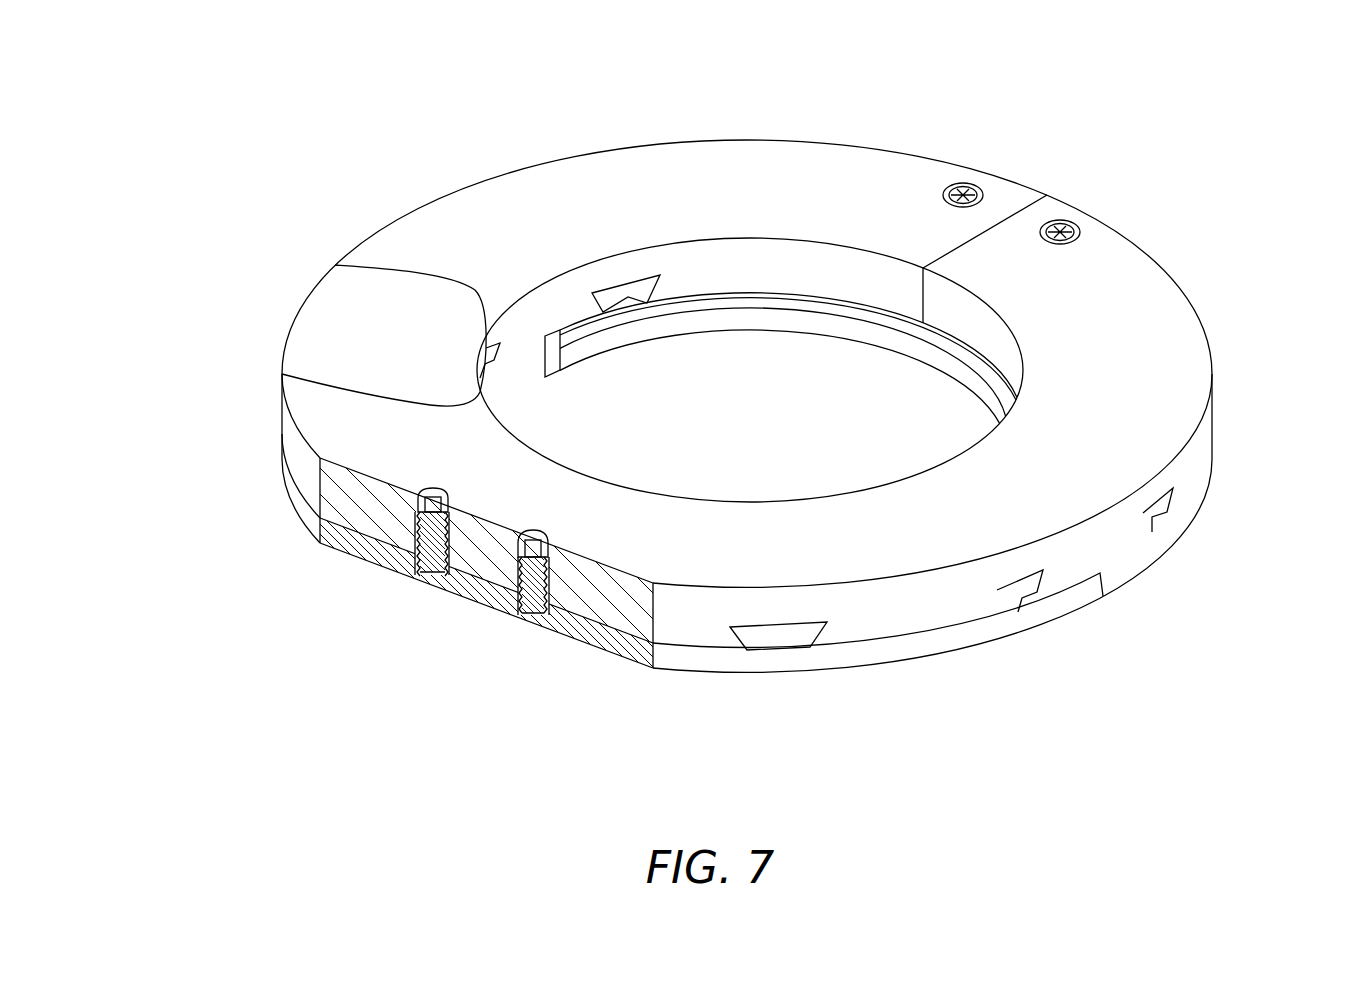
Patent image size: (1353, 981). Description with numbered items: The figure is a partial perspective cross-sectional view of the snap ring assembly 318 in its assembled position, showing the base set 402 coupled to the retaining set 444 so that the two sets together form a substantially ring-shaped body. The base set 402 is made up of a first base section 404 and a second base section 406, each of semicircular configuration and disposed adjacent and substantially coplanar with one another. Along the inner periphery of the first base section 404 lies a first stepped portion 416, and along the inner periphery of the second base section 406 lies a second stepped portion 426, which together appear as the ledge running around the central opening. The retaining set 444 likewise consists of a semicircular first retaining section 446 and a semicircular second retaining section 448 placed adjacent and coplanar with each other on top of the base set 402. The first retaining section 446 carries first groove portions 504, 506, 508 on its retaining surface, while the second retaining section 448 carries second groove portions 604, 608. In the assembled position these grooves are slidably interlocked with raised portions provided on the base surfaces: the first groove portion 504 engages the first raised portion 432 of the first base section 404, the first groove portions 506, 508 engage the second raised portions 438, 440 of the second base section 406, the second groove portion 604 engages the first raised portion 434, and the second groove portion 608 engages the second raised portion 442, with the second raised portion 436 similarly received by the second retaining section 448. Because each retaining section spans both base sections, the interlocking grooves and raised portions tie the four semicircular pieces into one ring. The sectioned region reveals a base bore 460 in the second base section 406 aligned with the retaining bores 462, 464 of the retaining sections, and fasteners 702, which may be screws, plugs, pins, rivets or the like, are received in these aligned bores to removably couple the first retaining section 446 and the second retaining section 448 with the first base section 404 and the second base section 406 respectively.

The snap ring assembly 318 is at (1200, 108).
The base set 402 is at (1230, 487).
The first base section 404 is at (1200, 512).
The second base section 406 is at (948, 652).
The first stepped portion 416 is at (742, 332).
The second stepped portion 426 is at (545, 386).
The first raised portion 432 is at (1158, 514).
The first raised portion 434 is at (597, 313).
The second raised portion 436 is at (282, 437).
The second raised portion 438 is at (778, 635).
The second raised portion 440 is at (1032, 593).
The second raised portion 442 is at (282, 374).
The retaining set 444 is at (642, 118).
The first retaining section 446 is at (1130, 280).
The second retaining section 448 is at (327, 322).
The base bore 460 is at (404, 553).
The retaining bore 462 is at (547, 540).
The retaining bore 464 is at (443, 483).
The first groove portion 504 is at (1155, 497).
The first groove portion 506 is at (790, 618).
The first groove portion 508 is at (1018, 585).
The second groove portion 604 is at (600, 305).
The second groove portion 608 is at (335, 265).
The fasteners 702 is at (955, 196).